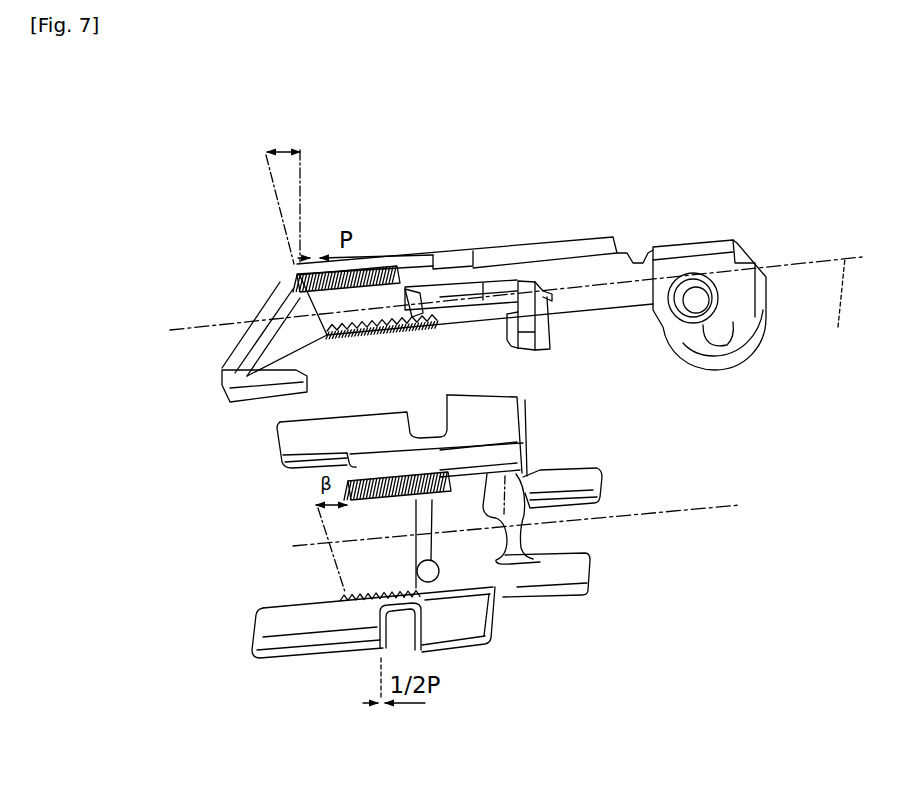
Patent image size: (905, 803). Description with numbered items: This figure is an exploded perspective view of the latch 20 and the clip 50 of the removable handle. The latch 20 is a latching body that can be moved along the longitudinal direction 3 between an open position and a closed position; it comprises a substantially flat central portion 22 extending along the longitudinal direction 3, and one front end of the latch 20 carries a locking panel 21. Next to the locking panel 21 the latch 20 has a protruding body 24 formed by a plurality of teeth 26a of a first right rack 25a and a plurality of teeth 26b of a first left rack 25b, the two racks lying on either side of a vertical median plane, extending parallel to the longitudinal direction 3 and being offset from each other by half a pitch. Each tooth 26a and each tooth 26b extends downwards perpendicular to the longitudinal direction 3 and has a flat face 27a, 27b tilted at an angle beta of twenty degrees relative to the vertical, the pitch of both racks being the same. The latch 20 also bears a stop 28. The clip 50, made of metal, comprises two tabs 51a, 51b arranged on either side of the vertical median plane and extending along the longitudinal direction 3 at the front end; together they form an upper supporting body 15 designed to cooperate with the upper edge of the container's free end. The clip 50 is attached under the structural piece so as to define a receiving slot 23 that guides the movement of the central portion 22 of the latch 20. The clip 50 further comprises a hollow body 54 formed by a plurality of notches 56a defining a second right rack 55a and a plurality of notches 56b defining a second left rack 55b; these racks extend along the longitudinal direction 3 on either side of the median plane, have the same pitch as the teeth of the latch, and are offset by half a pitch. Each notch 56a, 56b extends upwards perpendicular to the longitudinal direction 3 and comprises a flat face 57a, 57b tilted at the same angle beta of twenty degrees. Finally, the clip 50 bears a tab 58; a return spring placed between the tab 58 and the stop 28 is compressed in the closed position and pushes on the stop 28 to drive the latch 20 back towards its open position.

The longitudinal direction 3 is at (834, 311).
The upper supporting body 15 is at (290, 470).
The latch 20 is at (678, 251).
The locking panel 21 is at (253, 320).
The central portion 22 is at (487, 258).
The receiving slot 23 is at (470, 490).
The protruding body 24 is at (292, 278).
The first right rack 25a is at (407, 292).
The first left rack 25b is at (370, 268).
The teeth of the first right rack 26a is at (226, 395).
The teeth of the first left rack 26b is at (292, 268).
The flat face 27a is at (224, 367).
The flat face 27b is at (292, 280).
The stop 28 is at (551, 326).
The clip 50 is at (507, 600).
The tab 51a is at (290, 448).
The tab 51b is at (270, 635).
The hollow body 54 is at (347, 603).
The second right rack 55a is at (408, 480).
The second left rack 55b is at (430, 590).
The notches of the second right rack 56a is at (349, 483).
The notches of the second left rack 56b is at (345, 505).
The flat face 57a is at (416, 512).
The flat face 57b is at (416, 548).
The tab 58 is at (443, 592).